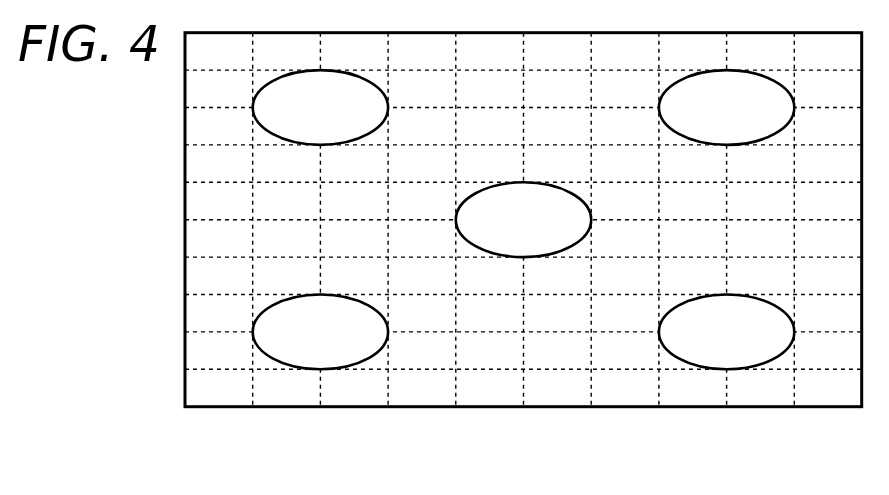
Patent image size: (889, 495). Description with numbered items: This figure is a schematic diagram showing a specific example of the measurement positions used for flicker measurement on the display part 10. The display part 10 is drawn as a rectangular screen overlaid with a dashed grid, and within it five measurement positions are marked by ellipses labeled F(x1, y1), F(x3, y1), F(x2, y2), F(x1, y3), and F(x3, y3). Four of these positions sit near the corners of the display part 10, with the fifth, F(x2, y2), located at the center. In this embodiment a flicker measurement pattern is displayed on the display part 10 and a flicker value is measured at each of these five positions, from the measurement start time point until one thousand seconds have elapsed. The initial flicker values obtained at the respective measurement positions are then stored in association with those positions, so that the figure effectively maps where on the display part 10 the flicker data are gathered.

The display part 10 is at (832, 408).